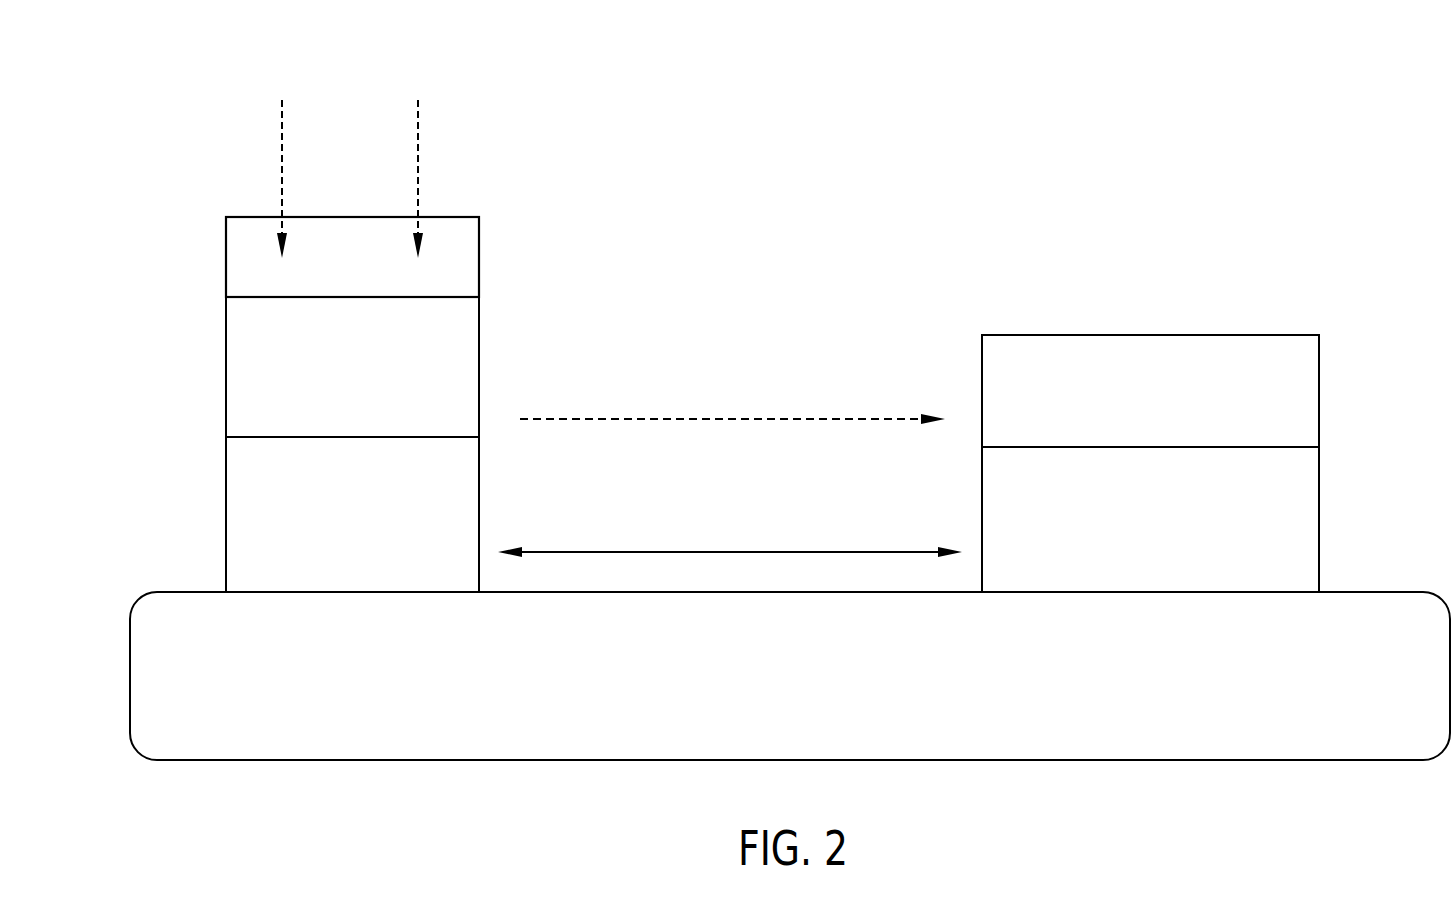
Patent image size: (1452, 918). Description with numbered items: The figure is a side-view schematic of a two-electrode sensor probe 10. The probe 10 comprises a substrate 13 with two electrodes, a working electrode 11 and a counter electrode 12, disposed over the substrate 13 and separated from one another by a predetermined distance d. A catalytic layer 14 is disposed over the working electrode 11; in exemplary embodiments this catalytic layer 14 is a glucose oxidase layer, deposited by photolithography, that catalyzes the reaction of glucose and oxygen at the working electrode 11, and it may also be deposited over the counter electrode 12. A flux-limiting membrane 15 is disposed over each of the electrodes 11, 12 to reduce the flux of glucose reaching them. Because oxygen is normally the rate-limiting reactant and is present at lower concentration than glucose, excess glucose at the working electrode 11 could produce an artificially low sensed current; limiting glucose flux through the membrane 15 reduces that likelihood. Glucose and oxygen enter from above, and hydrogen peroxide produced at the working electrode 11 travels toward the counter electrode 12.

The two-electrode sensor probe 10 is at (158, 117).
The working electrode 11 is at (235, 517).
The counter electrode 12 is at (1308, 520).
The substrate 13 is at (142, 677).
The catalytic layer 14 is at (235, 368).
The flux-limiting membrane 15 is at (235, 258).